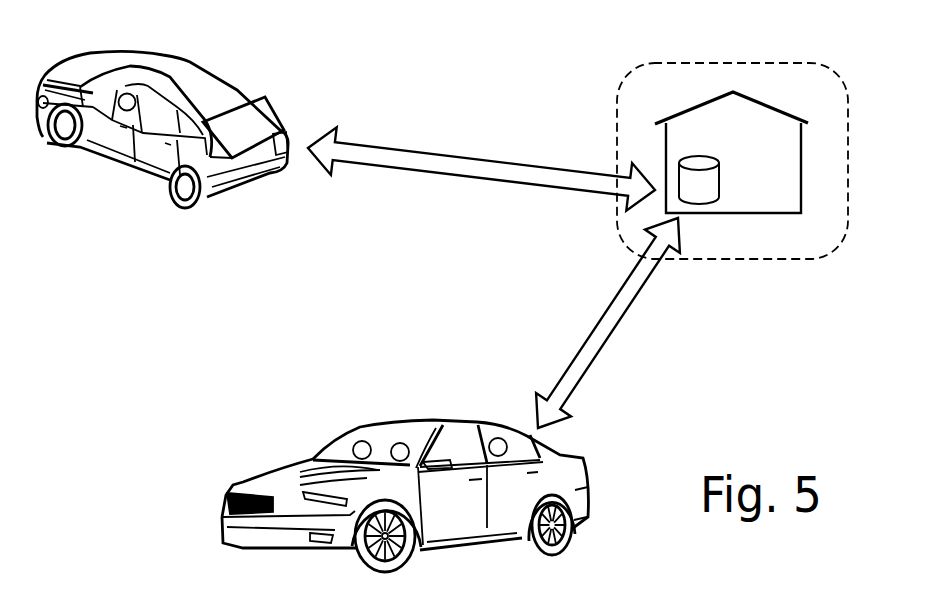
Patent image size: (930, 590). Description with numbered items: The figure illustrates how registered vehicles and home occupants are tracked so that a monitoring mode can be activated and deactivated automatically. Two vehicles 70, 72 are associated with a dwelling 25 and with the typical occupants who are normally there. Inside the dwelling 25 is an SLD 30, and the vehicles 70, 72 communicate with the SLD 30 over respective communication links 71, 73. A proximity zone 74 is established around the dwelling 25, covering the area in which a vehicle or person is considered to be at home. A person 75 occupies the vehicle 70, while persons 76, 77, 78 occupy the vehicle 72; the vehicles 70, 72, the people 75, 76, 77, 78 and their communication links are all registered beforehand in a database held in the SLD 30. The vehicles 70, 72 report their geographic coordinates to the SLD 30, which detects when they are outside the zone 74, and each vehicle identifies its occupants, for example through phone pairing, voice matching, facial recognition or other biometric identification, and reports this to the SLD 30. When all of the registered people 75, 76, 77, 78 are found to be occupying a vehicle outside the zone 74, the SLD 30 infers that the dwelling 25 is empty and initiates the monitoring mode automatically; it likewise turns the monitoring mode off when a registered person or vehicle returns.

The dwelling 25 is at (802, 155).
The SLD 30 is at (715, 180).
The vehicle 70 is at (118, 163).
The communication link 71 is at (437, 153).
The vehicle 72 is at (257, 472).
The communication link 73 is at (587, 340).
The proximity zone 74 is at (660, 63).
The person 75 is at (121, 96).
The person 76 is at (353, 443).
The person 77 is at (398, 442).
The person 78 is at (493, 438).